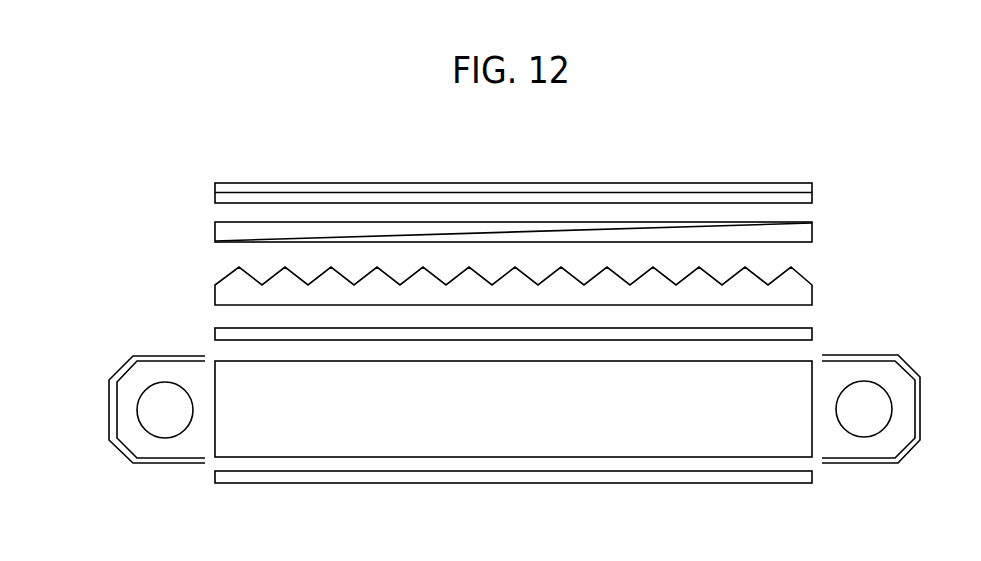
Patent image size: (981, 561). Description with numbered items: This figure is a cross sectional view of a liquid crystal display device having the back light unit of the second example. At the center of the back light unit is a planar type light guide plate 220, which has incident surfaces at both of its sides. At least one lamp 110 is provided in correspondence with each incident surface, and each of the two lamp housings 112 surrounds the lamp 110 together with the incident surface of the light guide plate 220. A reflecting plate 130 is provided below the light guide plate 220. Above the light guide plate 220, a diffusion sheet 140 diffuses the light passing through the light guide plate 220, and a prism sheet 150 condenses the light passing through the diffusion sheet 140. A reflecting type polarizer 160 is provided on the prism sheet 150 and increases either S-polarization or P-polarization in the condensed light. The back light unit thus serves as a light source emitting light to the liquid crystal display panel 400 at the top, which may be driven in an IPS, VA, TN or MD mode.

The liquid crystal display panel 400 is at (812, 192).
The reflecting type polarizer 160 is at (812, 238).
The prism sheet 150 is at (812, 295).
The diffusion sheet 140 is at (812, 335).
The planar type light guide plate 220 is at (693, 443).
The reflecting plate 130 is at (587, 477).
The lamp housing 112 is at (115, 410).
The lamp 110 is at (163, 390).